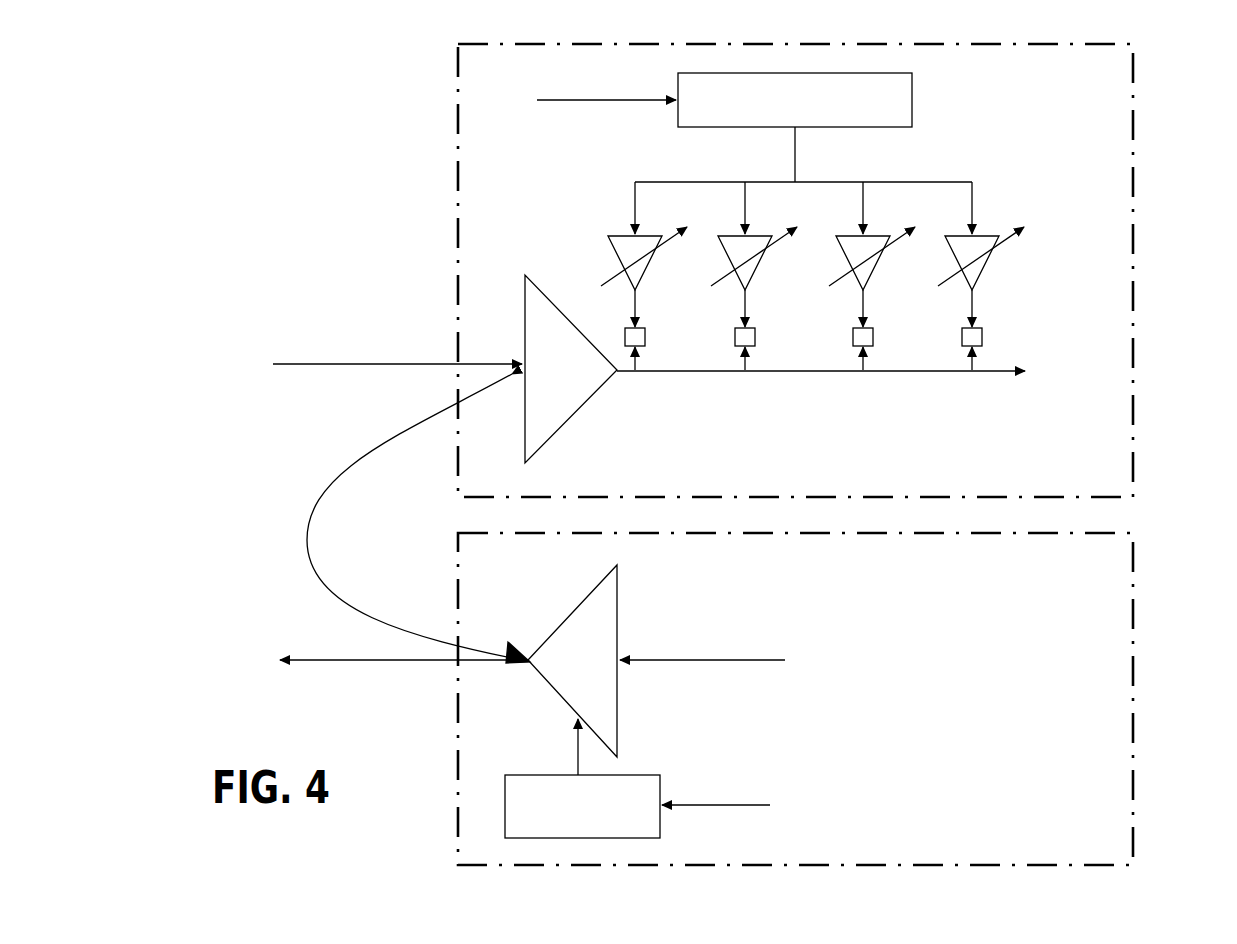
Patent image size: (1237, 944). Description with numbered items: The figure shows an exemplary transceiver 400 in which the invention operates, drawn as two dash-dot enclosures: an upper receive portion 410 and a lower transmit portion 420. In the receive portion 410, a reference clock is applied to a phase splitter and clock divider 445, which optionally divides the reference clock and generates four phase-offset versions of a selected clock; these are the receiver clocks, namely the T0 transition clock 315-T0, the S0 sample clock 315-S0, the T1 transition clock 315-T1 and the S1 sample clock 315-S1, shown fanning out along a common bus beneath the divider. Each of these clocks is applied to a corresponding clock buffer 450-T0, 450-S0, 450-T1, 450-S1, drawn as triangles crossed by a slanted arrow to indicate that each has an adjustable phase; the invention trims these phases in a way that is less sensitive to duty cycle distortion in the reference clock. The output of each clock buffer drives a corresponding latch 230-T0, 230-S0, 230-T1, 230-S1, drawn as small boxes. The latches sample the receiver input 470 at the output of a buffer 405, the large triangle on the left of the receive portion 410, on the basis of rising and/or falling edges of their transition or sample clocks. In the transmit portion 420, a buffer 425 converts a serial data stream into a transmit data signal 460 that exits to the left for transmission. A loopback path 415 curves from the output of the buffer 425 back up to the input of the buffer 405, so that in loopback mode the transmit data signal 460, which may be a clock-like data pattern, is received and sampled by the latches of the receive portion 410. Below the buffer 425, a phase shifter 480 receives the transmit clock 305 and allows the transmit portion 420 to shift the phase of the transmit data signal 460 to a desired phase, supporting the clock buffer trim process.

The transceiver 400 is at (250, 77).
The receive portion 410 is at (455, 53).
The transmit portion 420 is at (1138, 568).
The phase splitter and clock divider 445 is at (866, 73).
The T0 transition clock 315-T0 is at (636, 203).
The S0 sample clock 315-S0 is at (744, 200).
The T1 transition clock 315-T1 is at (868, 190).
The S1 sample clock 315-S1 is at (975, 200).
The clock buffer 450-T0 is at (651, 234).
The clock buffer 450-S0 is at (761, 234).
The clock buffer 450-T1 is at (879, 234).
The clock buffer 450-S1 is at (992, 236).
The latch 230-T0 is at (666, 330).
The latch 230-S0 is at (777, 330).
The latch 230-T1 is at (893, 330).
The latch 230-S1 is at (1004, 330).
The buffer 405 is at (571, 369).
The receiver input 470 is at (396, 339).
The loopback path 415 is at (418, 518).
The buffer 425 is at (572, 661).
The transmit data signal 460 is at (399, 691).
The phase shifter 480 is at (647, 771).
The transmit clock 305 is at (723, 807).